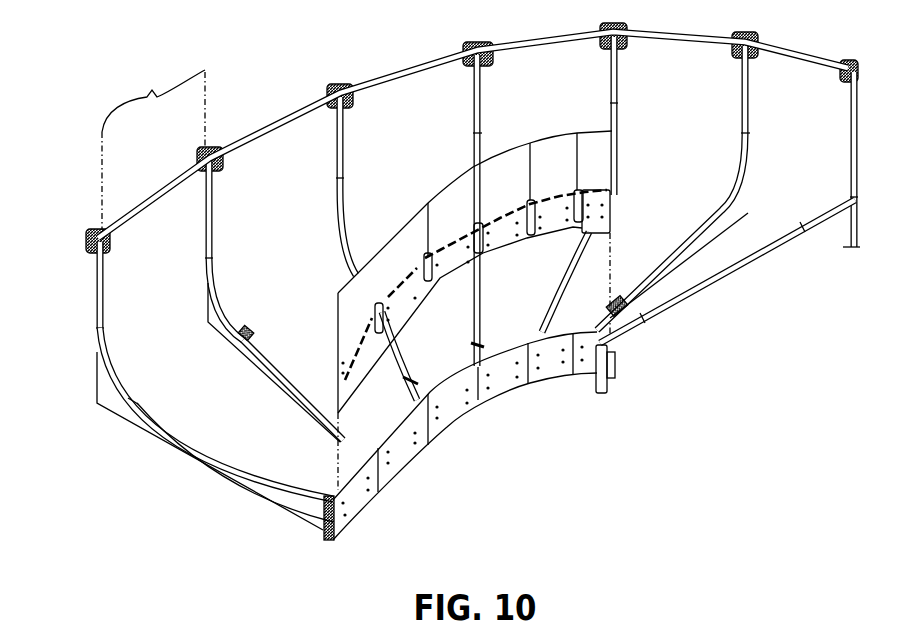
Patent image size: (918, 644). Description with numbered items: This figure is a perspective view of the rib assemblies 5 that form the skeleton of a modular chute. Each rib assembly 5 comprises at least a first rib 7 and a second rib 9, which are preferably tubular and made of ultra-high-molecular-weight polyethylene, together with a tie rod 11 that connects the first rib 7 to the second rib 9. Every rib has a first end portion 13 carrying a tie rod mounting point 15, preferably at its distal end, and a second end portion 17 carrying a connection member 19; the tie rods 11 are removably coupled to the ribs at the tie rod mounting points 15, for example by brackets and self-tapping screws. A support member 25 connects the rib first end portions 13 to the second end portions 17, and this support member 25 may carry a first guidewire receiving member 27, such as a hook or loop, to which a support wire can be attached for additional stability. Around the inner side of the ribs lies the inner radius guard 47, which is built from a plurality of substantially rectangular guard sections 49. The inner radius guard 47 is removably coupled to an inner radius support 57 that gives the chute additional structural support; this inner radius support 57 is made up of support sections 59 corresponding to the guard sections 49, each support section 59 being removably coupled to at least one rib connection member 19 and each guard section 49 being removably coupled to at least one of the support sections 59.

The rib assembly 5 is at (153, 149).
The first rib 7 is at (112, 360).
The second rib 9 is at (228, 290).
The tie rod 11 is at (150, 196).
The first end portion 13 is at (95, 327).
The tie rod mounting point 15 is at (200, 150).
The second end portion 17 is at (265, 492).
The connection member 19 is at (325, 527).
The support member 25 is at (235, 343).
The first guidewire receiving member 27 is at (255, 332).
The inner radius guard 47 is at (338, 348).
The guard section 49 is at (403, 222).
The inner radius support 57 is at (337, 540).
The support section 59 is at (355, 498).